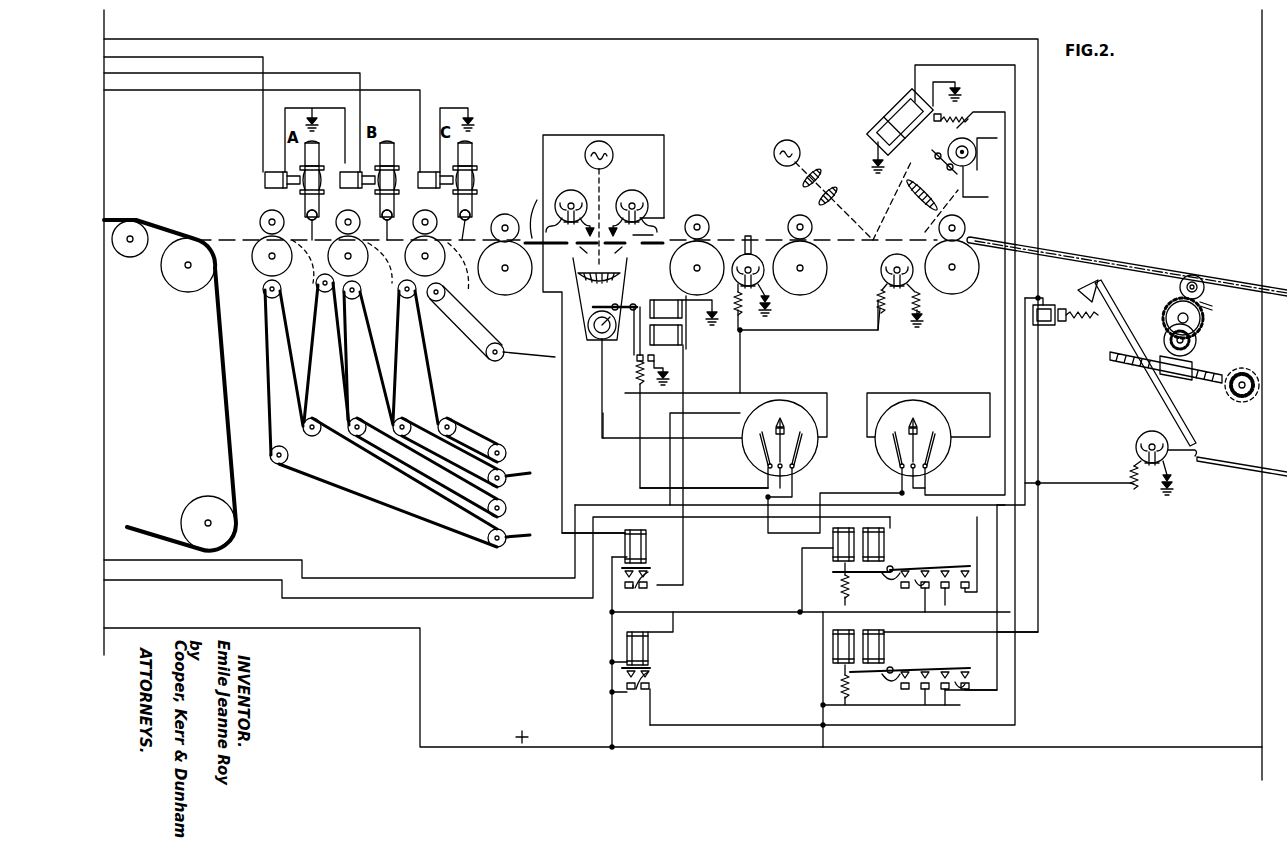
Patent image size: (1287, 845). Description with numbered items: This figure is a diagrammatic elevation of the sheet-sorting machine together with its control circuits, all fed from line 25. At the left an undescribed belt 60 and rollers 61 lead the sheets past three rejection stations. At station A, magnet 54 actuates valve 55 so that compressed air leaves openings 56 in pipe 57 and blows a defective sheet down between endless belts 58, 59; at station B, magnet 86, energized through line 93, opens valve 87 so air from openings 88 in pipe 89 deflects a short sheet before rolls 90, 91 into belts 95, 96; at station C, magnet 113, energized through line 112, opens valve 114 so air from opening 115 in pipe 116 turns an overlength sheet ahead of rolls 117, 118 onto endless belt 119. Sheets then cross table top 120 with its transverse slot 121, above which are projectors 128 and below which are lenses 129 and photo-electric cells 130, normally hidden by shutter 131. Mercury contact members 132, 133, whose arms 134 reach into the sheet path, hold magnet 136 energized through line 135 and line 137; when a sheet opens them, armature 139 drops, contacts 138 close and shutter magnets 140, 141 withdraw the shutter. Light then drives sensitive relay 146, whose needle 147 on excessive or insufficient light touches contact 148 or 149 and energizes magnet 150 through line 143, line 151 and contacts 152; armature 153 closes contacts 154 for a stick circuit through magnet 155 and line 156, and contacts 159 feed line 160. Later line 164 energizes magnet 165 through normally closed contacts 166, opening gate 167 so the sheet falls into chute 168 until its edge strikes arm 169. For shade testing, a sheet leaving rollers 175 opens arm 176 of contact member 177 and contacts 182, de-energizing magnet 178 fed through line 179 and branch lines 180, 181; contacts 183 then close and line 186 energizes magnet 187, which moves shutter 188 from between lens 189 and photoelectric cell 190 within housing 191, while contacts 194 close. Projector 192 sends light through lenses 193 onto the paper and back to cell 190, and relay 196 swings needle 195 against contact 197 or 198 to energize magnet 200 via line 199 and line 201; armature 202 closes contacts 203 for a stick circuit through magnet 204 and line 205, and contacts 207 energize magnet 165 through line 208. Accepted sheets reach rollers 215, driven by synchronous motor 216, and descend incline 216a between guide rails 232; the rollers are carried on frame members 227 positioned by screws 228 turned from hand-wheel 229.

The line 25 is at (950, 747).
The magnet 54 is at (275, 185).
The valve 55 is at (312, 178).
The openings 56 is at (318, 220).
The pipe 57 is at (306, 214).
The endless belt 58 is at (280, 350).
The endless belt 59 is at (314, 350).
The feed belt 60 is at (228, 363).
The belt rollers 61 is at (182, 284).
The magnet 86 is at (352, 172).
The valve 87 is at (387, 178).
The openings 88 is at (392, 221).
The pipe 89 is at (382, 214).
The roll 90 is at (433, 226).
The roll 91 is at (406, 255).
The line 93 is at (290, 73).
The endless belt 95 is at (372, 345).
The endless belt 96 is at (402, 310).
The line 112 is at (390, 90).
The magnet 113 is at (435, 172).
The valve 114 is at (475, 179).
The opening 115 is at (462, 241).
The pipe 116 is at (470, 214).
The roll 117 is at (512, 218).
The roll 118 is at (512, 289).
The endless belt 119 is at (481, 329).
The table top 120 is at (531, 210).
The slot 121 is at (598, 259).
The projectors 128 is at (613, 152).
The lenses 129 is at (616, 266).
The photo-electric cells 130 is at (596, 337).
The shutter 131 is at (598, 307).
The mercury contact member 132 is at (571, 190).
The mercury contact member 133 is at (640, 183).
The arm 134 is at (562, 255).
The line 135 is at (611, 717).
The magnet 136 is at (642, 549).
The line 137 is at (565, 461).
The contacts 138 is at (640, 586).
The armature 139 is at (644, 570).
The shutter operating magnet 140 is at (676, 341).
The shutter operating magnet 141 is at (666, 302).
The line 143 is at (772, 608).
The milliampere sensitive relay 146 is at (803, 421).
The needle 147 is at (783, 419).
The contact 148 is at (752, 438).
The contact 149 is at (817, 449).
The magnet 150 is at (832, 549).
The line 151 is at (743, 484).
The contacts 152 is at (648, 387).
The armature 153 is at (860, 586).
The contacts 154 is at (910, 583).
The magnet 155 is at (884, 549).
The line 156 is at (484, 599).
The contacts 159 is at (950, 600).
The line 160 is at (374, 577).
The line 164 is at (509, 35).
The magnet 165 is at (1044, 326).
The contacts 166 is at (1134, 451).
The gate 167 is at (1092, 283).
The chute 168 is at (1117, 318).
The arm 169 is at (1188, 455).
The rollers 175 is at (705, 253).
The arm 176 is at (752, 243).
The contact member 177 is at (742, 255).
The magnet 178 is at (650, 653).
The line 179 is at (742, 347).
The branch line 180 is at (739, 327).
The branch line 181 is at (812, 321).
The contacts 182 is at (881, 274).
The contacts 183 is at (637, 693).
The line 186 is at (1017, 84).
The magnet 187 is at (910, 104).
The shutter 188 is at (940, 172).
The lens 189 is at (913, 203).
The photoelectric cell 190 is at (963, 161).
The housing 191 is at (968, 136).
The projector 192 is at (788, 140).
The lenses 193 is at (831, 178).
The contacts 194 is at (960, 108).
The needle 195 is at (918, 420).
The milliampere sensitive relay 196 is at (933, 423).
The contact 197 is at (900, 436).
The contact 198 is at (932, 456).
The line 199 is at (826, 736).
The magnet 200 is at (832, 651).
The line 201 is at (992, 480).
The armature 202 is at (874, 683).
The contacts 203 is at (912, 675).
The magnet 204 is at (884, 644).
The line 205 is at (1040, 546).
The contacts 207 is at (955, 689).
The line 208 is at (992, 660).
The rollers 215 is at (1220, 286).
The synchronous motor 216 is at (1197, 351).
The incline 216a is at (1208, 311).
The frame members 227 is at (1185, 278).
The screws 228 is at (1197, 383).
The hand-wheel 229 is at (1240, 402).
The guide rails 232 is at (1150, 271).